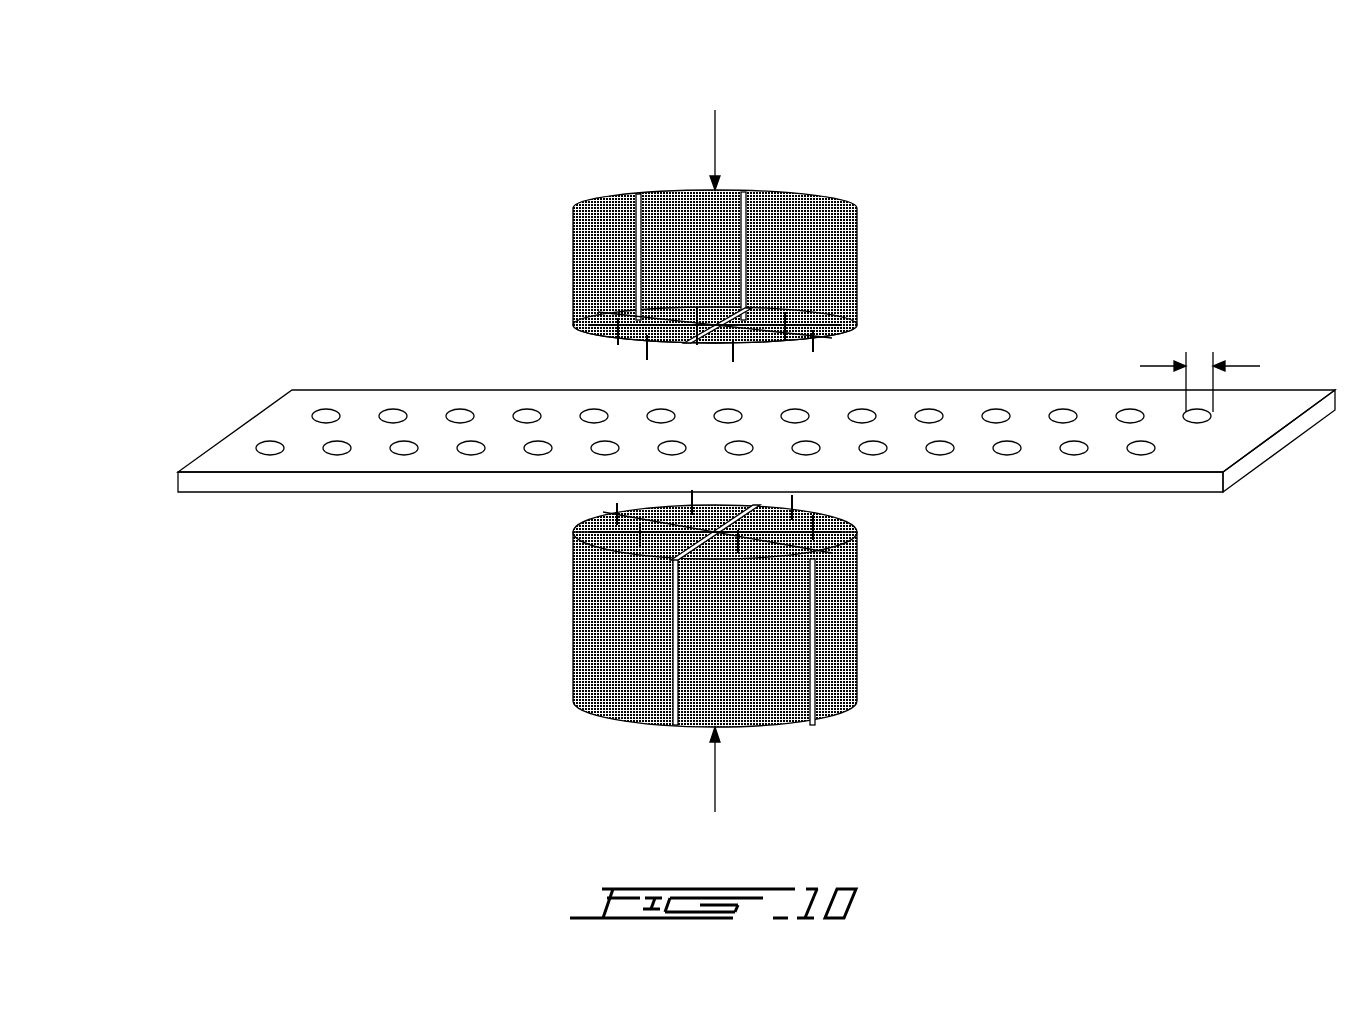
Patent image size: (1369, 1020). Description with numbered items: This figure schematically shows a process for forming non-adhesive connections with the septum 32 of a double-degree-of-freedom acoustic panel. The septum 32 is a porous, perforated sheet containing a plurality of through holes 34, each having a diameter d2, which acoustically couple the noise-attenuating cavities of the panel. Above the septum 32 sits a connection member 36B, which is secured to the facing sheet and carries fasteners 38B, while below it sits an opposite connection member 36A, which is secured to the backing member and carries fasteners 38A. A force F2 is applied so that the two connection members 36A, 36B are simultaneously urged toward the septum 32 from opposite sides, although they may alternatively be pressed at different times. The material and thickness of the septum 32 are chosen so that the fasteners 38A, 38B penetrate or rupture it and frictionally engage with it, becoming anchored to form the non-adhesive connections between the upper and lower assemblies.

The septum 32 is at (248, 420).
The through holes 34 is at (393, 416).
The connection member 36A is at (602, 630).
The connection member 36B is at (598, 237).
The fasteners 38A is at (612, 505).
The fasteners 38B is at (603, 335).
The diameter d2 is at (1200, 366).
The force F2 is at (715, 462).